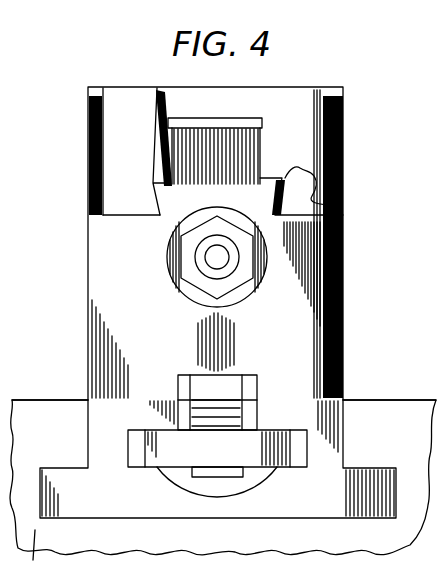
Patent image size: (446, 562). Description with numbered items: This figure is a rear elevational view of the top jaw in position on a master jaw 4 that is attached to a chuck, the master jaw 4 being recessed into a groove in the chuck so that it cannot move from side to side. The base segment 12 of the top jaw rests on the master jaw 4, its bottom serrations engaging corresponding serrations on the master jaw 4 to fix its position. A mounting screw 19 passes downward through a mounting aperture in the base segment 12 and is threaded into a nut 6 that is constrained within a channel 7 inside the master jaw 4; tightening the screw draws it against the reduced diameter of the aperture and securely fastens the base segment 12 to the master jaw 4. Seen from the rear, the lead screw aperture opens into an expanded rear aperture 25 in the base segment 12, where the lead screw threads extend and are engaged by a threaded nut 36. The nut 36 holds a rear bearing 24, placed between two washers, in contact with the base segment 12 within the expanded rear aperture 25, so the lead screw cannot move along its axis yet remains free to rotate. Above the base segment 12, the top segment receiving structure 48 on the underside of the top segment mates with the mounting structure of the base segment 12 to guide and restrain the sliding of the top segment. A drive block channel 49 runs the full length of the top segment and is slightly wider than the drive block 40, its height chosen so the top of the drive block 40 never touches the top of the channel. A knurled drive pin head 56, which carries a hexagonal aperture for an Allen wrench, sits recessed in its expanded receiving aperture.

The master jaw 4 is at (118, 505).
The nut 6 is at (273, 468).
The channel 7 is at (178, 378).
The base segment 12 is at (108, 288).
The mounting screw 19 is at (228, 384).
The rear bearing 24 is at (150, 192).
The expanded rear aperture 25 is at (252, 292).
The threaded nut 36 is at (268, 238).
The drive block 40 is at (234, 130).
The top segment receiving structure 48 is at (343, 205).
The drive block channel 49 is at (187, 117).
The drive pin head 56 is at (347, 143).